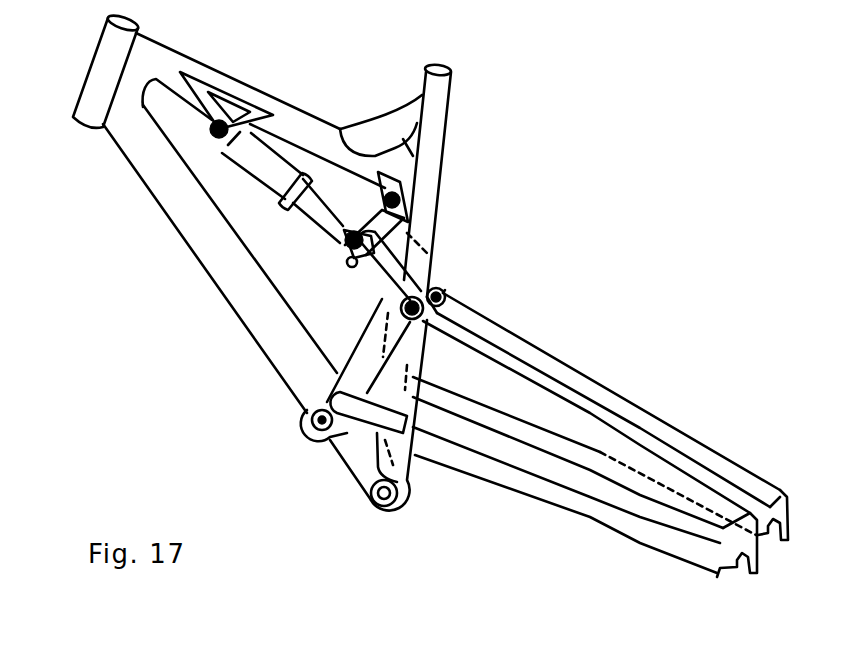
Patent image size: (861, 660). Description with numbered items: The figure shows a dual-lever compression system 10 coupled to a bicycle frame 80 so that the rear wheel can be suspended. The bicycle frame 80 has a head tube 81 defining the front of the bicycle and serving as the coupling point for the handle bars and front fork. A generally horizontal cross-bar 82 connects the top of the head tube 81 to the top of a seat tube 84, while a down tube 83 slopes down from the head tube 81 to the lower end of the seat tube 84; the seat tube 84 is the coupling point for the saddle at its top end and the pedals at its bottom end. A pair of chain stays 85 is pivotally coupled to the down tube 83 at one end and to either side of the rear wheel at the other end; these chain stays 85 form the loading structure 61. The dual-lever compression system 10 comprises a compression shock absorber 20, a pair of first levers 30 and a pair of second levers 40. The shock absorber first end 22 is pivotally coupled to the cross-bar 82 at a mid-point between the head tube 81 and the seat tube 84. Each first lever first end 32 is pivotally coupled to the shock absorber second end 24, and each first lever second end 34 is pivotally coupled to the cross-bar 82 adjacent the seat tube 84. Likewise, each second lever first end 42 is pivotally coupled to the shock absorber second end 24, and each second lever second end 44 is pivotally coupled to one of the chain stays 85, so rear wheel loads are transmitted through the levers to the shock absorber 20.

The dual-lever compression system 10 is at (440, 250).
The compression shock absorber 20 is at (243, 170).
The shock absorber first end 22 is at (210, 123).
The shock absorber second end 24 is at (343, 239).
The first levers 30 is at (365, 220).
The first lever first end 32 is at (337, 251).
The first lever second end 34 is at (382, 192).
The second levers 40 is at (381, 286).
The second lever first end 42 is at (347, 263).
The second lever second end 44 is at (463, 285).
The loading structure 61 is at (541, 511).
The bicycle frame 80 is at (446, 155).
The head tube 81 is at (100, 42).
The cross-bar 82 is at (203, 67).
The down tube 83 is at (167, 217).
The seat tube 84 is at (455, 81).
The chain stays 85 is at (737, 457).